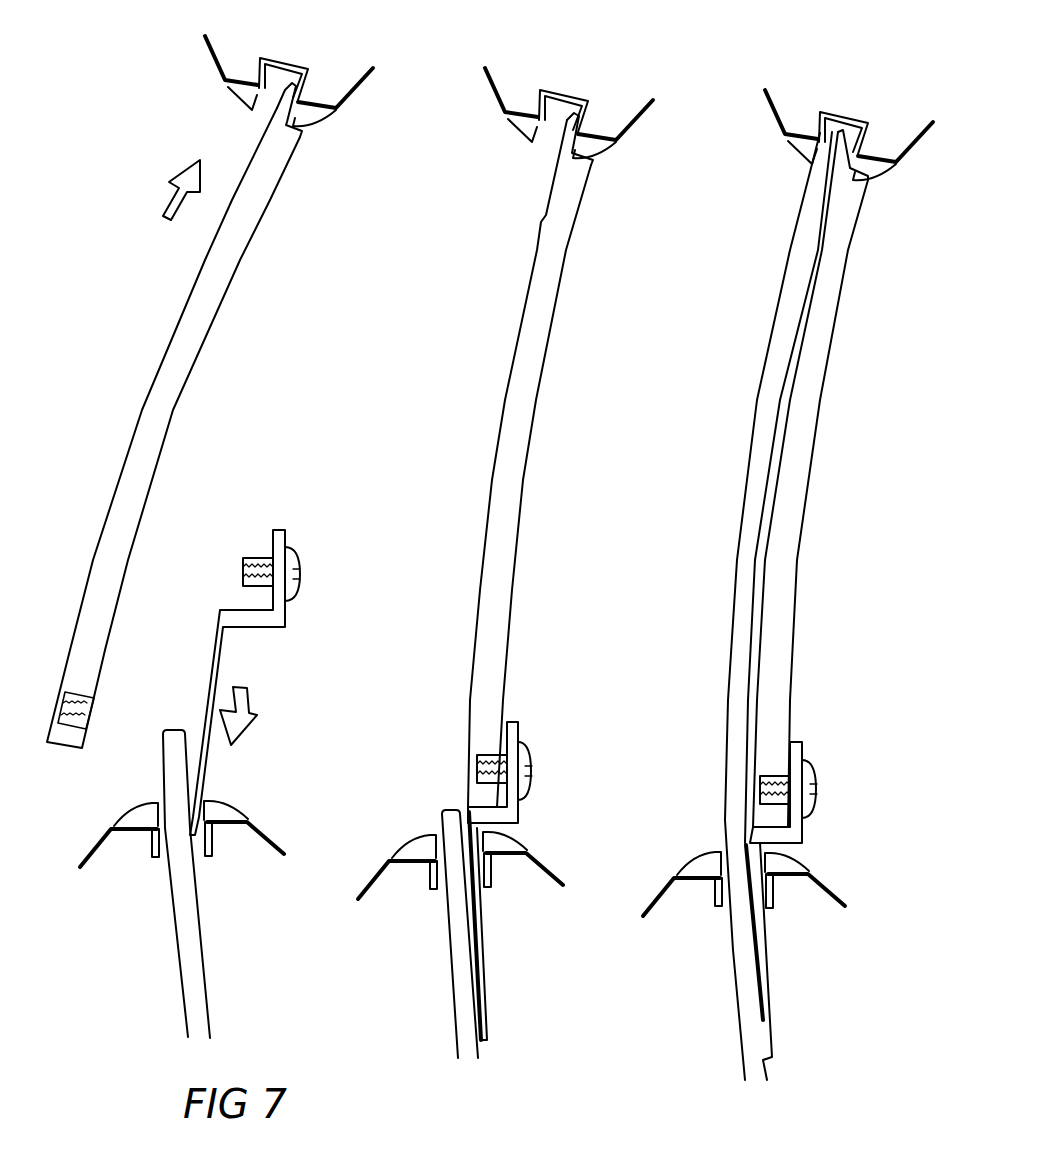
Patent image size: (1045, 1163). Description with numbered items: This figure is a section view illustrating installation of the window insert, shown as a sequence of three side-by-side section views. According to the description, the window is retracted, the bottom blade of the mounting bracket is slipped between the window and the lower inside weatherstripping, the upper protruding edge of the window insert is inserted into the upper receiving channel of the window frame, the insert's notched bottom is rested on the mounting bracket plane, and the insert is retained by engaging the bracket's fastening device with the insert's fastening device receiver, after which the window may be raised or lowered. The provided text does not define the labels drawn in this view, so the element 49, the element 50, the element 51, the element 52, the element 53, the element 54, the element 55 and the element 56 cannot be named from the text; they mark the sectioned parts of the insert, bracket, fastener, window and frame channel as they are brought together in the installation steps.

The bracket 49 is at (268, 620).
The lower panel 50 is at (176, 783).
The rail gasket 51 is at (218, 810).
The panel hook 52 is at (281, 90).
The top clip 53 is at (290, 72).
The upper panel 54 is at (210, 283).
The bracket engagement 55 is at (468, 808).
The screw 56 is at (818, 780).